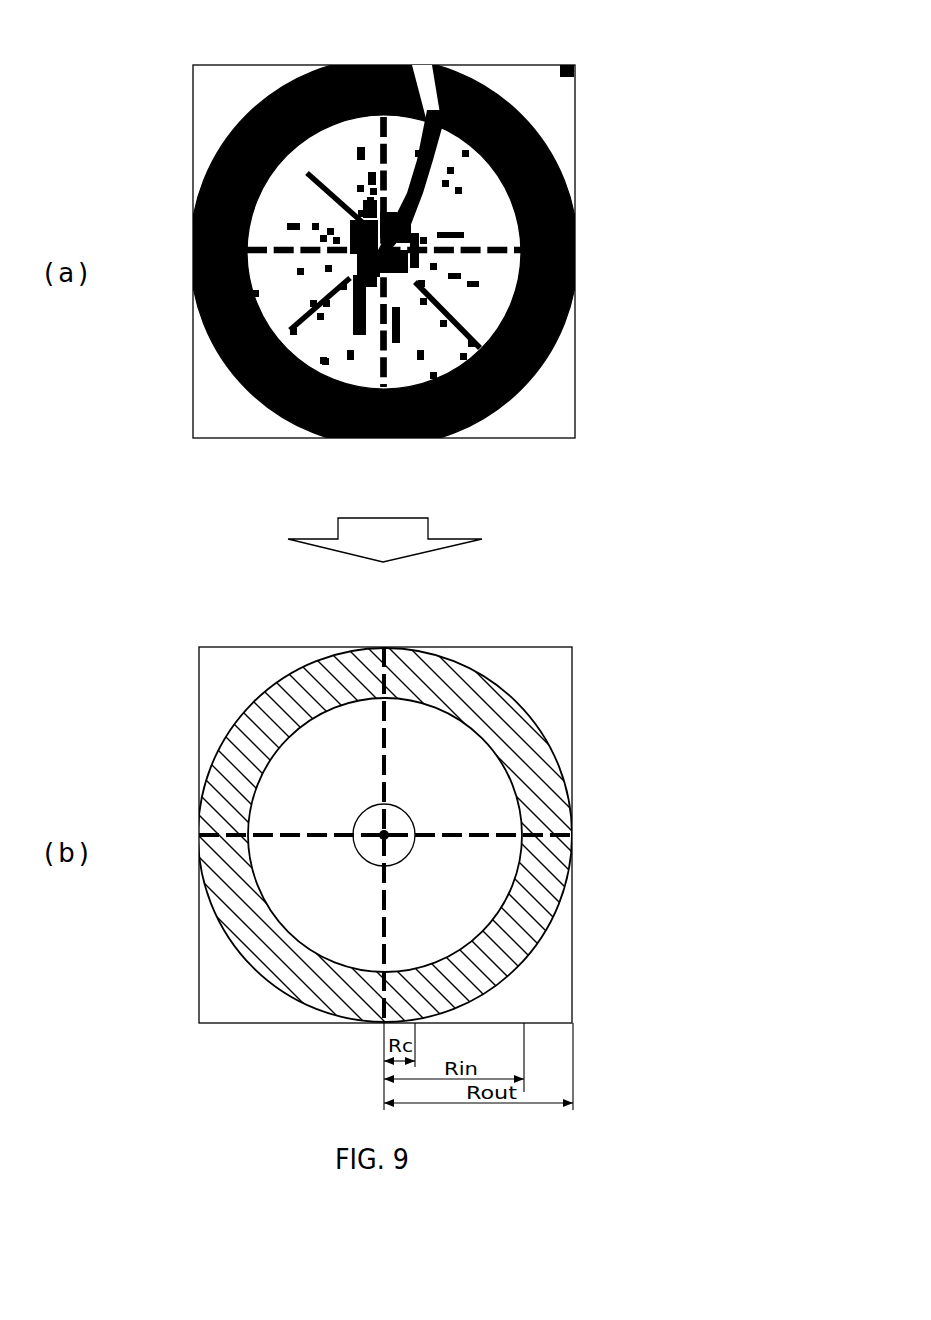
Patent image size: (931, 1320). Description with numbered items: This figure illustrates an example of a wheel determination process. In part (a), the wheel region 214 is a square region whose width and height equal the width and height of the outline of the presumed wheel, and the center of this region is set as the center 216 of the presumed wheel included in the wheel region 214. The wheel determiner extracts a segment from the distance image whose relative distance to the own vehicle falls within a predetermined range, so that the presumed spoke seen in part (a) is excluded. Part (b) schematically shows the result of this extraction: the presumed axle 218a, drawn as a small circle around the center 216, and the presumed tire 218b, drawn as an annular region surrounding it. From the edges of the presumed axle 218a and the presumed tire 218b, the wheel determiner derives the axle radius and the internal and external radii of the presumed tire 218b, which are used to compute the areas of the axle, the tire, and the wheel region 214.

The wheel region 214 is at (247, 65).
The center 216 is at (382, 257).
The presumed axle 218a is at (366, 811).
The presumed tire 218b is at (524, 706).